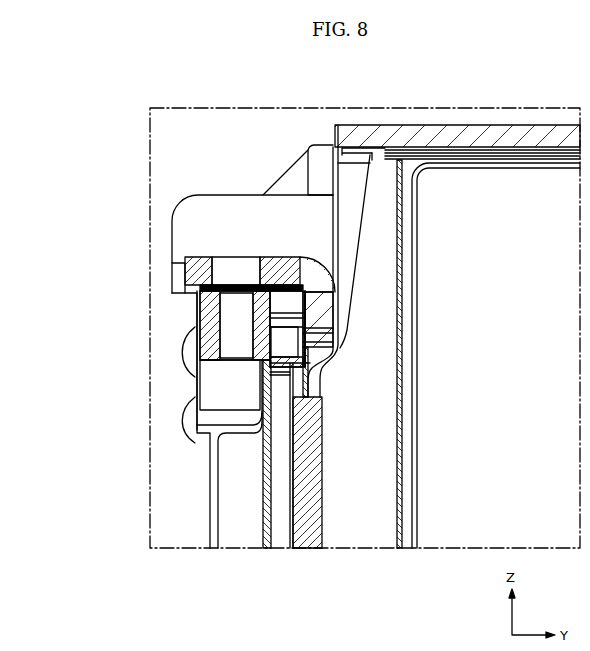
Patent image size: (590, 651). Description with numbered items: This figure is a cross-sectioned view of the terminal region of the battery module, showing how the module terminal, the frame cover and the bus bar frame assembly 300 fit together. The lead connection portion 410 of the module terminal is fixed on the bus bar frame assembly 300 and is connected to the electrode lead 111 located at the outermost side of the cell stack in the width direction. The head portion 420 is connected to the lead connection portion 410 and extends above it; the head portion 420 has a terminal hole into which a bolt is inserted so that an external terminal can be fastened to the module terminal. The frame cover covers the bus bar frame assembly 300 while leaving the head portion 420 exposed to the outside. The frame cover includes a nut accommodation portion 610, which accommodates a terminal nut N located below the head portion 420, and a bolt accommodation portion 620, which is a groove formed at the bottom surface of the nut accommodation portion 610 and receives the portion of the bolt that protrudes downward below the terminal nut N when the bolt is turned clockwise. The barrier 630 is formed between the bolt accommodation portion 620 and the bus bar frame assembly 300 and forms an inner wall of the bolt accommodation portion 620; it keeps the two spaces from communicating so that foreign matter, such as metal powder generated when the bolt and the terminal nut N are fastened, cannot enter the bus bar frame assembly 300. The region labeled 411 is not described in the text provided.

The first housing portion 411 is at (237, 267).
The head portion 420 is at (287, 267).
The terminal nut N is at (213, 322).
The nut accommodation portion 610 is at (192, 345).
The bolt accommodation portion 620 is at (213, 383).
The barrier 630 is at (260, 397).
The lead connection portion 410 is at (278, 465).
The electrode lead 111 is at (265, 493).
The bus bar frame assembly 300 is at (305, 525).